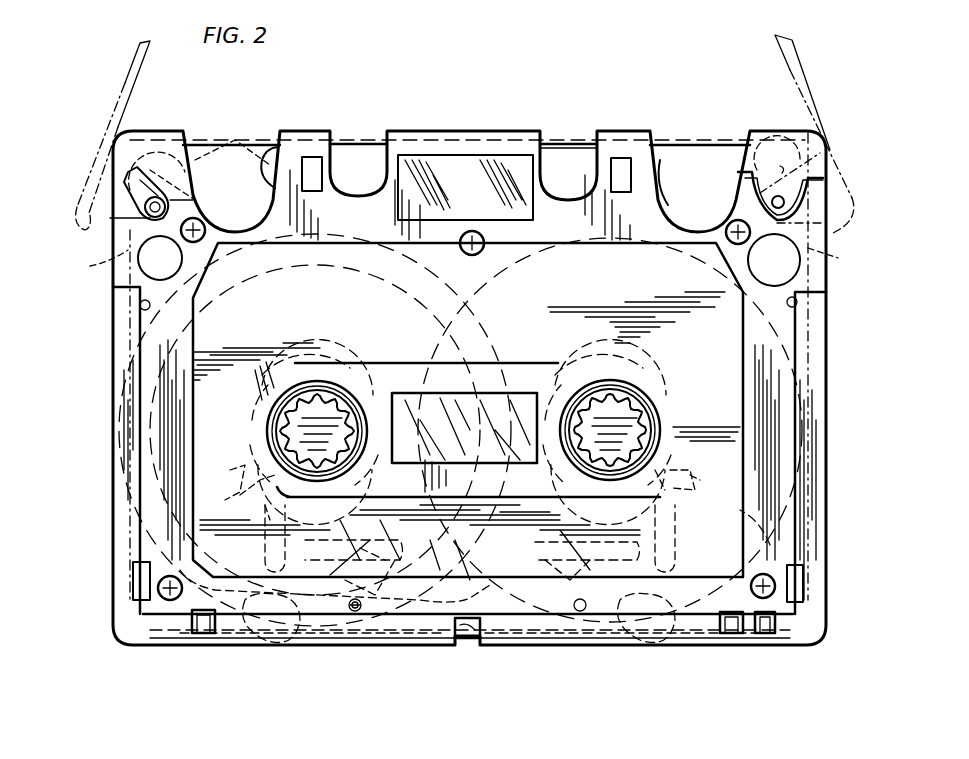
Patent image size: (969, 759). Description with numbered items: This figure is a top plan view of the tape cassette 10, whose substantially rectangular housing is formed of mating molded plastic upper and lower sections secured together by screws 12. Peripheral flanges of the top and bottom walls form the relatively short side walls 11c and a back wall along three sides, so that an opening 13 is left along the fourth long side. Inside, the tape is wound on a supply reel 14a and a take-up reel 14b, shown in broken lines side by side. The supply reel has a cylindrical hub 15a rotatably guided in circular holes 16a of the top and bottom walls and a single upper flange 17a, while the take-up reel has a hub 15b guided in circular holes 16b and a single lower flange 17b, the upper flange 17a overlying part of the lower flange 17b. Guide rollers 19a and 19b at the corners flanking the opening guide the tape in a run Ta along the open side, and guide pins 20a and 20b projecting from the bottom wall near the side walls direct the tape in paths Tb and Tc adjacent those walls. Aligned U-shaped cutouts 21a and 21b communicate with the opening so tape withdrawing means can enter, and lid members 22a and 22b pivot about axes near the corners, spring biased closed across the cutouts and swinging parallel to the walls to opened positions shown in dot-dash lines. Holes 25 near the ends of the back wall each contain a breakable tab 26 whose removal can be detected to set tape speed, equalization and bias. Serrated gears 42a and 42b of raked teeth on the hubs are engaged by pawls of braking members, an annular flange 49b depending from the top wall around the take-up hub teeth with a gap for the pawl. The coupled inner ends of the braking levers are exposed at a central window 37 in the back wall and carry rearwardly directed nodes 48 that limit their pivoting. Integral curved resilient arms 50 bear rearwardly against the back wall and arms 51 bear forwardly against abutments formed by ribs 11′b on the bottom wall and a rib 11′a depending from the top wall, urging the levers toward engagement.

The tape cassette 10 is at (655, 68).
The opening 13 is at (556, 130).
The lid member 22b is at (195, 132).
The guide roller 19b is at (218, 152).
The U-shaped cutout 21b is at (278, 146).
The tape run Ta is at (360, 140).
The U-shaped cutout 21a is at (660, 160).
The lid member 22a is at (765, 132).
The guide roller 19a is at (750, 150).
The take-up reel 14b is at (323, 243).
The supply reel 14a is at (770, 548).
The tape path Tc is at (93, 262).
The tape path Tb is at (837, 264).
The screw 12 is at (225, 272).
The guide pin 20b is at (140, 305).
The guide pin 20a is at (797, 302).
The cylindrical hub 15b is at (330, 392).
The cylindrical hub 15a is at (642, 410).
The annular flange 49b is at (435, 368).
The circular hole 16b is at (272, 412).
The circular hole 16a is at (608, 390).
The upper flange 17a is at (800, 410).
The lower flange 17b is at (130, 458).
The side wall 11c is at (805, 475).
The serrated gear 42b is at (355, 478).
The serrated gear 42a is at (668, 465).
The curved resilient arm 51 is at (355, 546).
The rib 11′b is at (620, 540).
The rib 11′a is at (383, 590).
The hole 25 is at (188, 626).
The breakable tab 26 is at (205, 635).
The curved resilient arm 50 is at (262, 640).
The opening or window 37 is at (458, 645).
The node 48 is at (496, 645).